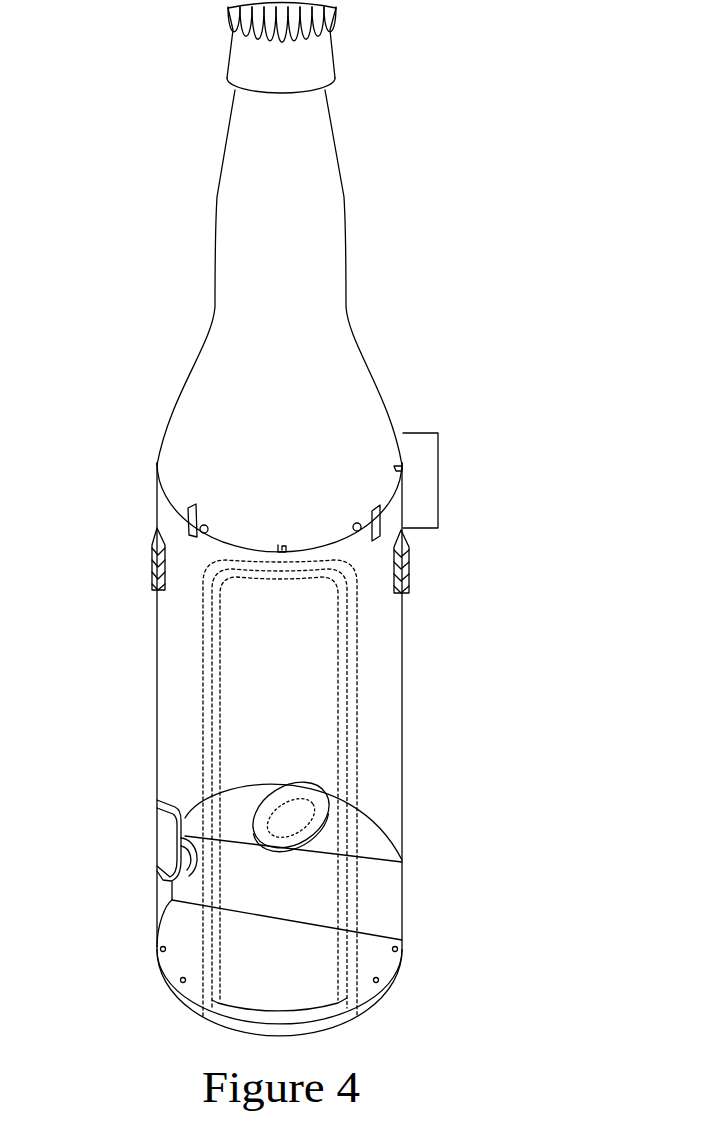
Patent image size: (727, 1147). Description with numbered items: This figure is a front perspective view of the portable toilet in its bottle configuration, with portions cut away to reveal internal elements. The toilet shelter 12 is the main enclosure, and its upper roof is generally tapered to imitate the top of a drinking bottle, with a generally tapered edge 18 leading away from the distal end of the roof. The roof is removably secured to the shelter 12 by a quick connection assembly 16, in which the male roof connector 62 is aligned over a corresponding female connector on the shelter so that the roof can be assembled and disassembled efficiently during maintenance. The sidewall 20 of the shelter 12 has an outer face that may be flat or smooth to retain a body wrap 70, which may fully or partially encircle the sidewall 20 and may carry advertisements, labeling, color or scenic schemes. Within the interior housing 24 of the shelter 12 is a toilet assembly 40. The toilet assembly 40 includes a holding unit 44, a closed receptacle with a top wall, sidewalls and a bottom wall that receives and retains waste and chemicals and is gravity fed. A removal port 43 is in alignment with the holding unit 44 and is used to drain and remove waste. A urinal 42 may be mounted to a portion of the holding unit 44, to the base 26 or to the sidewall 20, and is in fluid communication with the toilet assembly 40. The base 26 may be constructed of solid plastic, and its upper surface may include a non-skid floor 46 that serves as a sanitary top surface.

The toilet shelter 12 is at (178, 603).
The quick connection assembly 16 is at (426, 480).
The tapered edge 18 is at (345, 227).
The sidewall 20 is at (400, 710).
The interior housing 24 is at (315, 627).
The base 26 is at (402, 973).
The toilet assembly 40 is at (320, 798).
The urinal 42 is at (176, 822).
The removal port 43 is at (313, 806).
The holding unit 44 is at (390, 885).
The non-skid floor 46 is at (247, 958).
The male roof connector 62 is at (178, 518).
The body wrap 70 is at (400, 775).